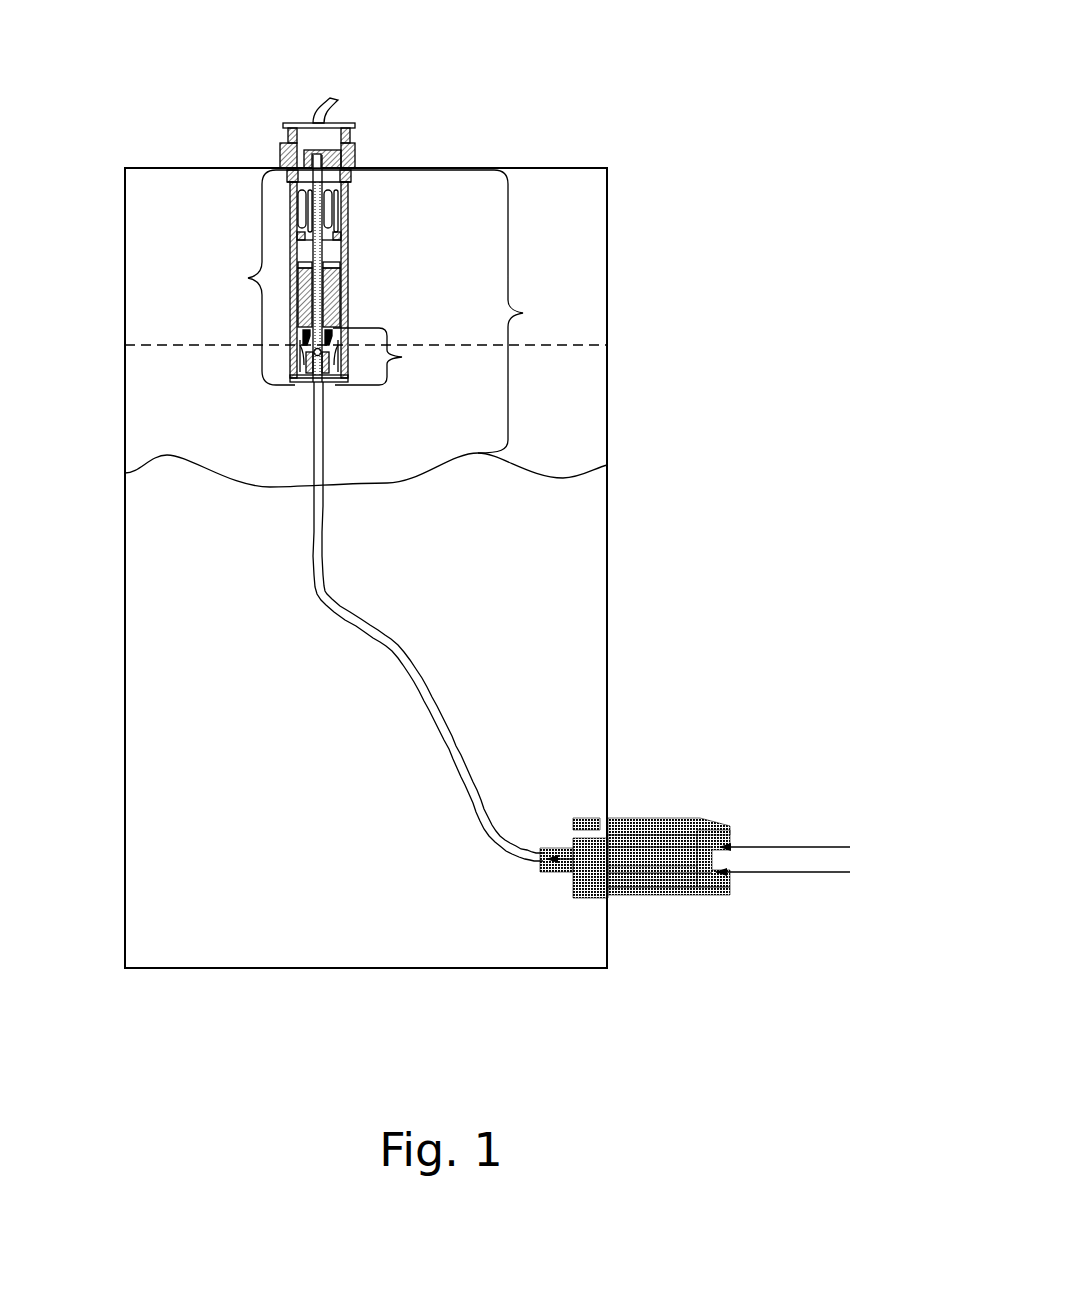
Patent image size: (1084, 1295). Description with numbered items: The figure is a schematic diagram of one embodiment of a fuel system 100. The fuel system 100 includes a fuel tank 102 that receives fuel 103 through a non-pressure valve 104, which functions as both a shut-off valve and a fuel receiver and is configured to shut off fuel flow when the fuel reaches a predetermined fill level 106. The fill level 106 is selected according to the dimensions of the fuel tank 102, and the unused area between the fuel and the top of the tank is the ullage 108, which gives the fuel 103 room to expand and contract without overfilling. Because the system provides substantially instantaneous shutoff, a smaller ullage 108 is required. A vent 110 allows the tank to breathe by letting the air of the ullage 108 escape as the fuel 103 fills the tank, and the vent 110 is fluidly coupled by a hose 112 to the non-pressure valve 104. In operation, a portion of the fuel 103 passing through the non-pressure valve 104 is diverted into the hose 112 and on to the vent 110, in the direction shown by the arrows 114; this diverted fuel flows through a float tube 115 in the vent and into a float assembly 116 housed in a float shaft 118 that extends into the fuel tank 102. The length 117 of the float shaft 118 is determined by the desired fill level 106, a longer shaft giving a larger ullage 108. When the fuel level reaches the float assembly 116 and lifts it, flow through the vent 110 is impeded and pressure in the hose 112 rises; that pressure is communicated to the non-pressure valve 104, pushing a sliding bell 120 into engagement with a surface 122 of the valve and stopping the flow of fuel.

The fuel system 100 is at (106, 58).
The fuel tank 102 is at (200, 168).
The fuel 103 is at (266, 718).
The non-pressure valve 104 is at (713, 826).
The predetermined fill level 106 is at (162, 345).
The ullage 108 is at (407, 311).
The vent 110 is at (352, 123).
The hose 112 is at (387, 633).
The arrows 114 is at (555, 847).
The float tube 115 is at (315, 375).
The float assembly 116 is at (377, 270).
The length of the float shaft 117 is at (281, 276).
The float shaft 118 is at (348, 247).
The sliding bell 120 is at (632, 886).
The surface 122 is at (644, 884).